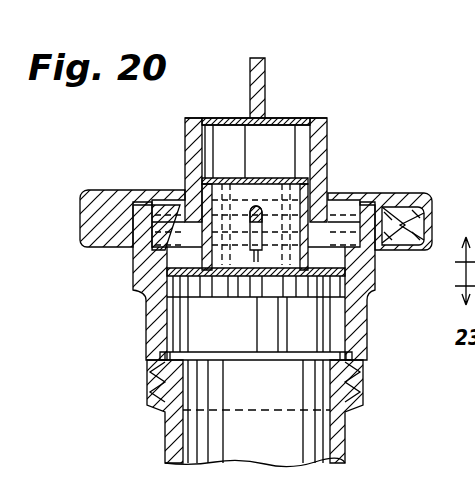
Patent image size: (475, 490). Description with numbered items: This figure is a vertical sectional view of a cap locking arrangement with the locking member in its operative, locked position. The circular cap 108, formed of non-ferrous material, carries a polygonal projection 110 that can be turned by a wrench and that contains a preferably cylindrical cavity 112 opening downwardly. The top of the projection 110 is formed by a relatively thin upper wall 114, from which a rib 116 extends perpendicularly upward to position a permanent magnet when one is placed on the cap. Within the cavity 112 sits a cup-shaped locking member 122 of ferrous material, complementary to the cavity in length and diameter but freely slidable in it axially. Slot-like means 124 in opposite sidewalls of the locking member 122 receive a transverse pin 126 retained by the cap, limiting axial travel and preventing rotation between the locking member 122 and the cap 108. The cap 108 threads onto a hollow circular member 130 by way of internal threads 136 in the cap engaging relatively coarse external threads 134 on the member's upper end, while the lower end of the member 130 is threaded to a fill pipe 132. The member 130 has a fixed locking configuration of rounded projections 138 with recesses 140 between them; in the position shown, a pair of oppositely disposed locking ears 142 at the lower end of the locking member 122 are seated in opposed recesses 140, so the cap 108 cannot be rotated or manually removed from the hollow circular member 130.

The circular cap 108 is at (390, 193).
The projection 110 is at (328, 148).
The cavity 112 is at (274, 128).
The upper wall 114 is at (233, 118).
The rib 116 is at (266, 72).
The locking member 122 is at (306, 180).
The slot-like means 124 is at (259, 292).
The pin 126 is at (252, 205).
The hollow circular member 130 is at (134, 308).
The fill pipe 132 is at (344, 442).
The external threads 134 is at (412, 205).
The internal threads 136 is at (165, 190).
The rounded projections 138 is at (180, 298).
The recesses 140 is at (308, 294).
The locking ears 142 is at (194, 282).